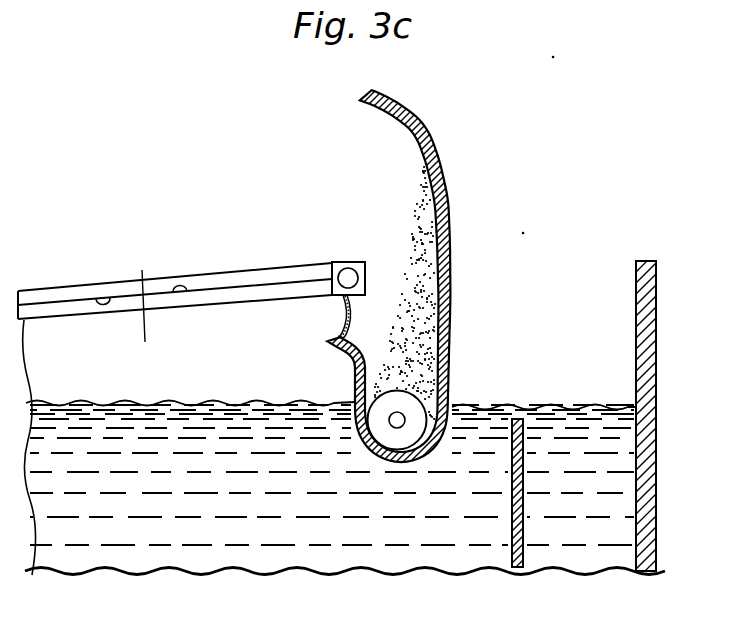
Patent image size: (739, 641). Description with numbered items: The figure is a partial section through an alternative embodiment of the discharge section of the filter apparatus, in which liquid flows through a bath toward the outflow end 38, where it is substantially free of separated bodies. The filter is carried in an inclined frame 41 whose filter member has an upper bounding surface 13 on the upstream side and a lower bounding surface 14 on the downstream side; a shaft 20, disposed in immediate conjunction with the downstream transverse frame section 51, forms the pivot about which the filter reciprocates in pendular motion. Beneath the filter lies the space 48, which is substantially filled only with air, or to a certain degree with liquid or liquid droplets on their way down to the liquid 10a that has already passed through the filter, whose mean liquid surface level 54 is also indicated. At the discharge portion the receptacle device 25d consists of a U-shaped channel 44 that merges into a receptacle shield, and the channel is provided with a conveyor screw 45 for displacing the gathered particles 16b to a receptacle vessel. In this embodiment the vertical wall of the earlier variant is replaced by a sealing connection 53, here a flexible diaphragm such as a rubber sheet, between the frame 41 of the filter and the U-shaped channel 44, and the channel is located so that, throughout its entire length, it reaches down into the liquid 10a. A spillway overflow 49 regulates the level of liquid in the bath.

The liquid 10a is at (175, 552).
The mean liquid surface level 54 is at (89, 398).
The frame 41 is at (50, 290).
The lower bounding surface 14 is at (103, 292).
The space 48 is at (142, 272).
The upper bounding surface 13 is at (180, 292).
The downstream transverse frame section 51 is at (346, 262).
The shaft 20 is at (352, 273).
The sealing connection 53 is at (342, 320).
The U-shaped channel 44 is at (355, 380).
The receptacle device 25d is at (413, 123).
The particles 16b is at (433, 339).
The conveyor screw 45 is at (406, 418).
The spillway overflow 49 is at (512, 513).
The outflow end 38 is at (651, 258).